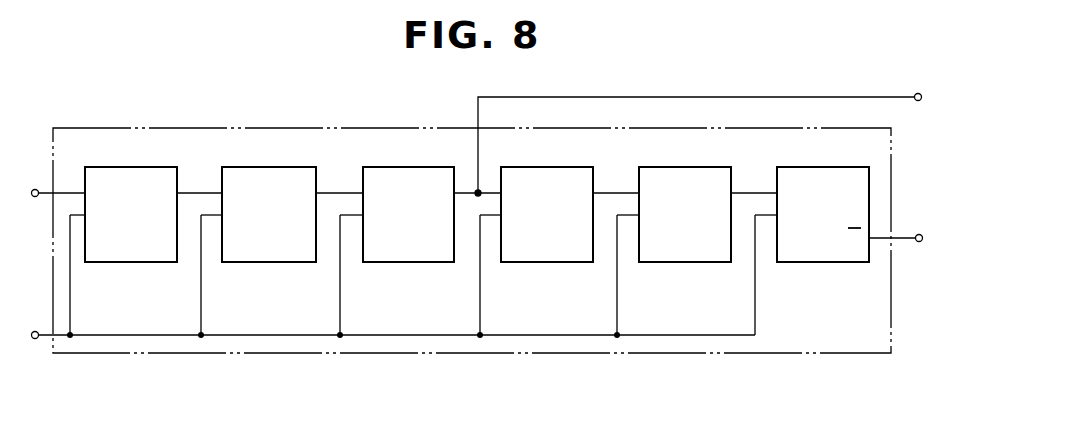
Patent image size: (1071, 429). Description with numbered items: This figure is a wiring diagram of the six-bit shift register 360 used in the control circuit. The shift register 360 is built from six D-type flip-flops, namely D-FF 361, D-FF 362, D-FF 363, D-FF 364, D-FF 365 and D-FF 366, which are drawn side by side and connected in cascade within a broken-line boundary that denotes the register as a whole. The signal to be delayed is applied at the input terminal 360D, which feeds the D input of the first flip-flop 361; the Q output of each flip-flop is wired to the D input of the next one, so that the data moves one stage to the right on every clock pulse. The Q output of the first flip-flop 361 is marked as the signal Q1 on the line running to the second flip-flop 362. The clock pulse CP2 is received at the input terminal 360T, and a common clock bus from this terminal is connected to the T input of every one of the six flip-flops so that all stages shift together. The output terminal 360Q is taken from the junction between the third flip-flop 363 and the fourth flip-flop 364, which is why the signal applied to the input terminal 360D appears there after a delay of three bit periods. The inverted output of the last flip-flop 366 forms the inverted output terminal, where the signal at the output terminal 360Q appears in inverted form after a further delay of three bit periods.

The 6-bit shift register 360 is at (350, 127).
The input terminal 360D is at (35, 189).
The input terminal for the clock pulse CP2 360T is at (36, 339).
The output terminal 360Q is at (916, 94).
The Q1 output signal of first flip-flop Q1 is at (197, 190).
The D-FF 361 is at (125, 263).
The D-FF 362 is at (265, 263).
The D-FF 363 is at (402, 263).
The D-FF 364 is at (542, 263).
The D-FF 365 is at (683, 263).
The D-FF 366 is at (800, 263).